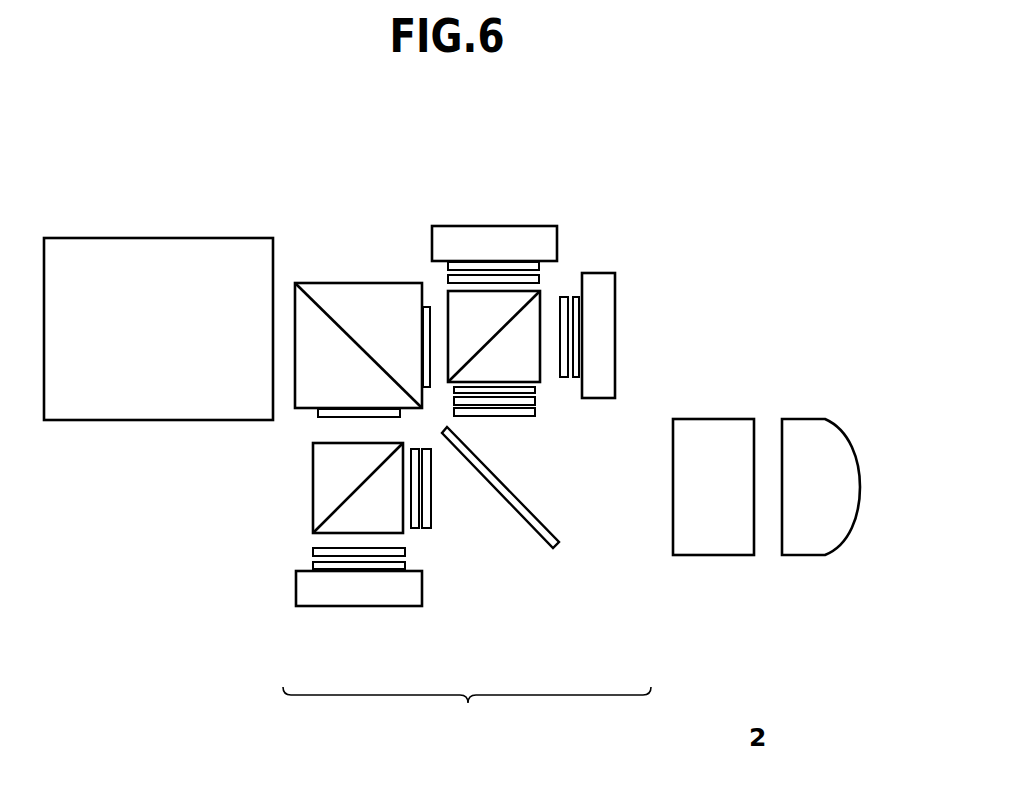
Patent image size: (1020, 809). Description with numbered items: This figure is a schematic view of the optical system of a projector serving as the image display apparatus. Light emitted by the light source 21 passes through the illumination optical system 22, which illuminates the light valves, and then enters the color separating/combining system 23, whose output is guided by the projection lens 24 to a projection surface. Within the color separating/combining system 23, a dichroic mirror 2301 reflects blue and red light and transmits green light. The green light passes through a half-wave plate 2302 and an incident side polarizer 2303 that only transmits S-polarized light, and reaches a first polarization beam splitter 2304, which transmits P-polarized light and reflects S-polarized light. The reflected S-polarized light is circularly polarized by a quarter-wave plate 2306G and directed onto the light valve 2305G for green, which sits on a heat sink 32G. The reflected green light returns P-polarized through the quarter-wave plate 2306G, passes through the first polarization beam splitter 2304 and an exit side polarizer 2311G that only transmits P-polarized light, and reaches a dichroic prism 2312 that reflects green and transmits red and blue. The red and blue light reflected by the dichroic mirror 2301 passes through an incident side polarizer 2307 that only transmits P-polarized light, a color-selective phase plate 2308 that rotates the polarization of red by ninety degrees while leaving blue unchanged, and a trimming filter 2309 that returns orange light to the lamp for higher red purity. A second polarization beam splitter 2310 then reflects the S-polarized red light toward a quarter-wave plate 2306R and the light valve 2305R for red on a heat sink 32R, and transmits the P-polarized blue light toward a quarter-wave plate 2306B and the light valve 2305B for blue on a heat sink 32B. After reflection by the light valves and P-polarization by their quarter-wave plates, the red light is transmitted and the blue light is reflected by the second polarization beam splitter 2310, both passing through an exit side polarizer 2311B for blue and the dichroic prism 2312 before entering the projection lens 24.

The light source 21 is at (804, 429).
The illumination optical system 22 is at (712, 429).
The color separating/combining system 23 is at (467, 710).
The projection lens 24 is at (164, 252).
The heat sink for blue 32B is at (496, 240).
The heat sink for green 32G is at (358, 598).
The heat sink for red 32R is at (605, 357).
The dichroic mirror 2301 is at (503, 491).
The half-wave plate 2302 is at (427, 529).
The incident side polarizer for green 2303 is at (415, 529).
The first polarization beam splitter 2304 is at (322, 487).
The light valve for green 2305G is at (313, 565).
The quarter-wave plate for green 2306G is at (313, 553).
The light valve for blue 2305B is at (522, 264).
The quarter-wave plate for blue 2306B is at (463, 277).
The light valve for red 2305R is at (578, 310).
The quarter-wave plate for red 2306R is at (562, 300).
The incident side polarizer for red and blue 2307 is at (490, 416).
The color-selective phase plate 2308 is at (532, 403).
The trimming filter 2309 is at (532, 392).
The second polarization beam splitter 2310 is at (527, 372).
The exit side polarizer for blue 2311B is at (427, 323).
The exit side polarizer for green 2311G is at (348, 418).
The dichroic prism 2312 is at (338, 295).